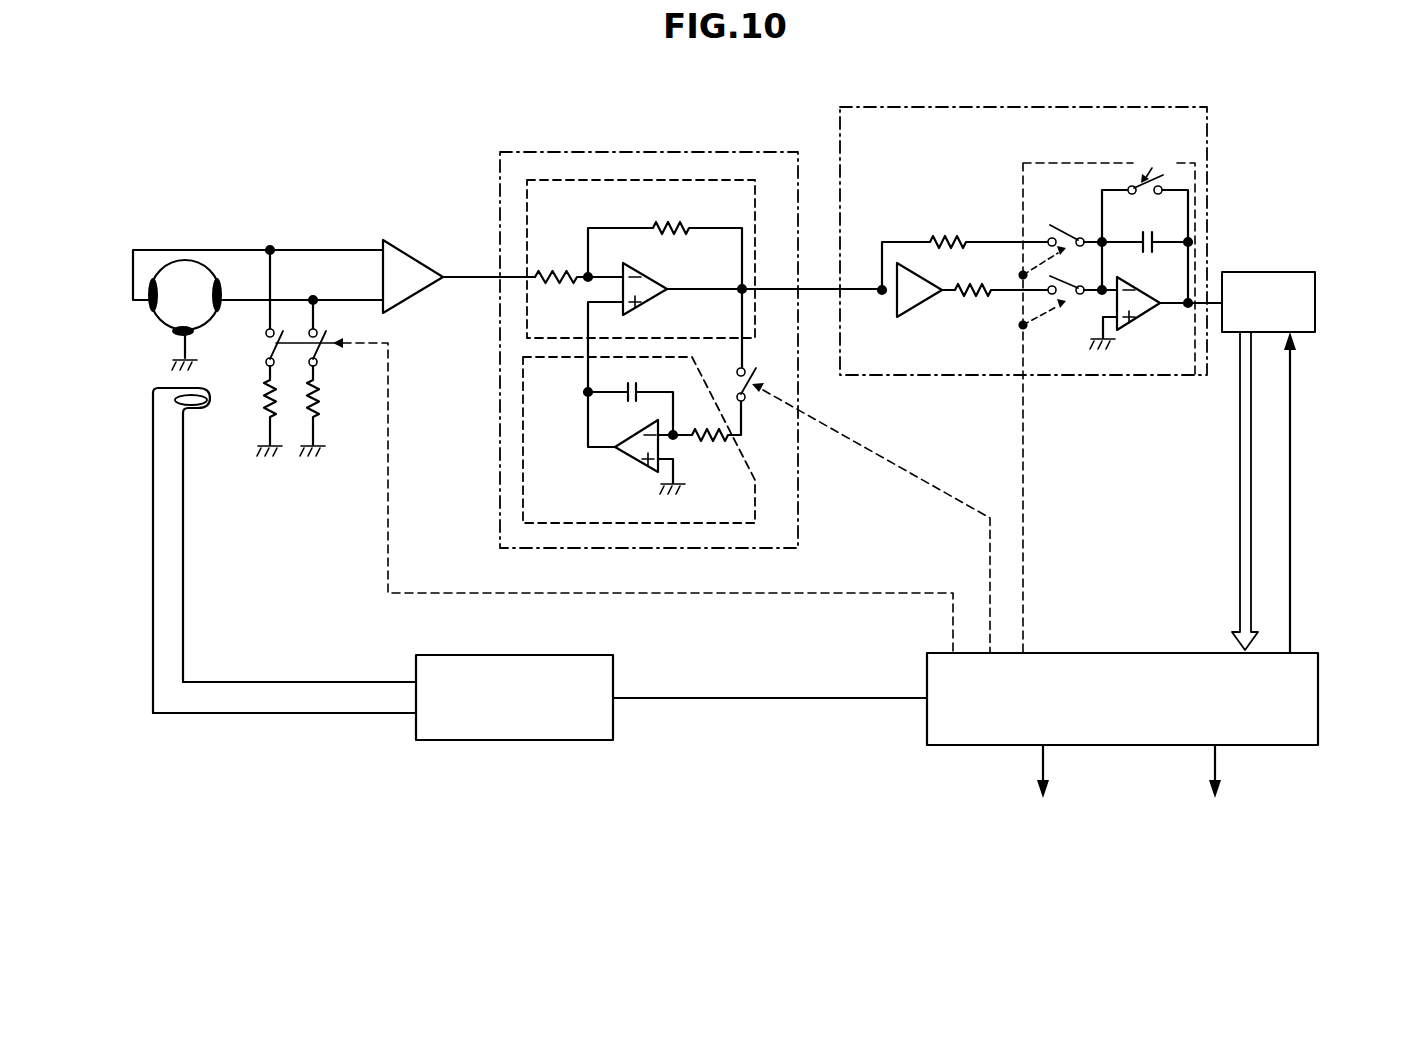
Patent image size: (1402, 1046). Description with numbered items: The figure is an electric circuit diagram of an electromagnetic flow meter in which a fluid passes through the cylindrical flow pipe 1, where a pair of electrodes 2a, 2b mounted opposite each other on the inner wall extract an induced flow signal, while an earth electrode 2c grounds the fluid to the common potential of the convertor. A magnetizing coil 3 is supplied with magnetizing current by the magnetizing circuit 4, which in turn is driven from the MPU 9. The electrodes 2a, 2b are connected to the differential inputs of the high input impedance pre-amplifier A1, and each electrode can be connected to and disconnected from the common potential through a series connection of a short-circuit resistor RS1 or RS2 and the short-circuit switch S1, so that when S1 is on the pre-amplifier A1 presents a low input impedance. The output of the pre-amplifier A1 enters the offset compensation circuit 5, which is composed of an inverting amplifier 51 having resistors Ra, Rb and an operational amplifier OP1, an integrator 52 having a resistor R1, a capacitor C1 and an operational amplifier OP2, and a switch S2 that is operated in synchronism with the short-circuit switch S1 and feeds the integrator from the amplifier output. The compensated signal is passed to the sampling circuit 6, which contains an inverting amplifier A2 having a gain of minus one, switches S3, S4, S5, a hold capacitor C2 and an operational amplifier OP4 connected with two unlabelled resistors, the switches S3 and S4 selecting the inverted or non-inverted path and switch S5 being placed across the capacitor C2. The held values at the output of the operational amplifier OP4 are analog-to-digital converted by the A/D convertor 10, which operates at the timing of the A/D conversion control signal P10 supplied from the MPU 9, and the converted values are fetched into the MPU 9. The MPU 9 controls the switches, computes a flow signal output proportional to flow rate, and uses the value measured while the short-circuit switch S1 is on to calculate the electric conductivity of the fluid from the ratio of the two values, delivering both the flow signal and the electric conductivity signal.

The flow pipe 1 is at (152, 322).
The electrode 2a is at (163, 272).
The electrode 2b is at (209, 272).
The earth electrode 2c is at (198, 332).
The magnetizing coil 3 is at (284, 550).
The magnetizing circuit 4 is at (522, 741).
The offset compensation circuit 5 is at (684, 153).
The inverting amplifier 51 is at (577, 180).
The integrator 52 is at (523, 418).
The sampling circuit 6 is at (1207, 143).
The MPU 9 is at (1290, 746).
The A/D convertor 10 is at (1315, 302).
The short-circuit switch S1 is at (609, 453).
The short-circuit resistor RS1 is at (248, 411).
The short-circuit resistor RS2 is at (333, 411).
The pre-amplifier A1 is at (459, 276).
The resistor Ra is at (579, 291).
The resistor Rb is at (665, 240).
The operational amplifier OP1 is at (645, 303).
The capacitor C1 is at (628, 399).
The operational amplifier OP2 is at (636, 458).
The resistor R1 is at (705, 437).
The switch S2 is at (863, 473).
The inverting amplifier A2 is at (963, 284).
The switch S3 is at (1069, 243).
The switch S4 is at (1069, 305).
The switch S5 is at (1145, 228).
The capacitor C2 is at (1147, 257).
The operational amplifier OP4 is at (1148, 311).
The A/D conversion control signal P10 is at (1286, 492).